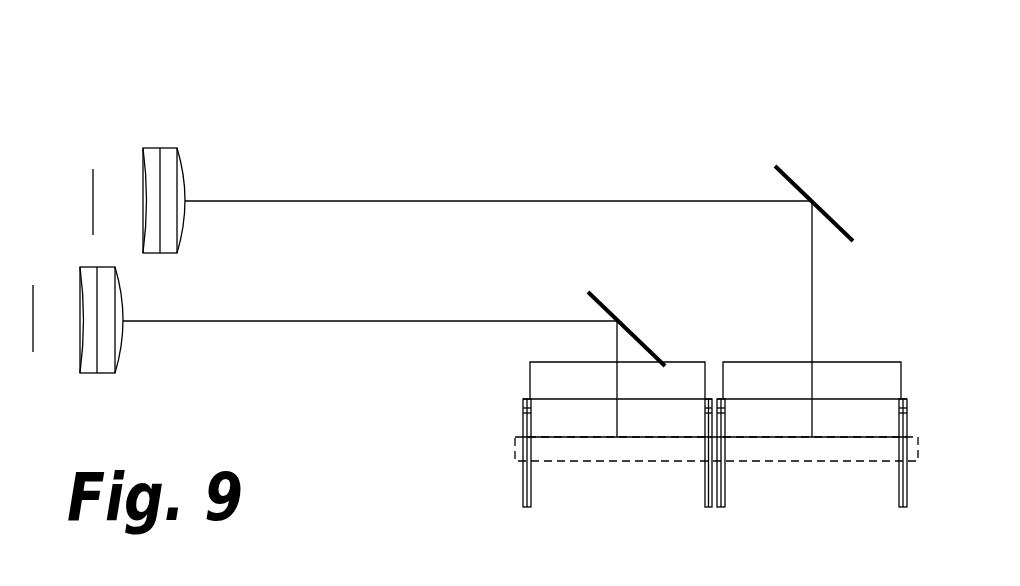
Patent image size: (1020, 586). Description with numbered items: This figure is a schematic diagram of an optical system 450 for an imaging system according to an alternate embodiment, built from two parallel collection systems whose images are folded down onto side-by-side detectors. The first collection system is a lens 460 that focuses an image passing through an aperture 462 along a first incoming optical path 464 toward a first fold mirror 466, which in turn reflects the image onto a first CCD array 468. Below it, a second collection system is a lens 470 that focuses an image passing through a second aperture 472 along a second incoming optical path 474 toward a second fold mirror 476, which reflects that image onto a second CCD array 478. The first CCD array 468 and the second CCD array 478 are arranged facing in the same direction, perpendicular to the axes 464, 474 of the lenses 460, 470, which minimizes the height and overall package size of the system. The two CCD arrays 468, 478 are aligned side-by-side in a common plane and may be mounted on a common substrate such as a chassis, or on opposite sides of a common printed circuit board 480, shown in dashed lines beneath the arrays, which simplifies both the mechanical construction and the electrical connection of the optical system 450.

The optical system 450 is at (346, 56).
The lens 460 is at (175, 175).
The aperture 462 is at (91, 196).
The first incoming optical path 464 is at (552, 200).
The first fold mirror 466 is at (795, 184).
The first CCD array 468 is at (768, 377).
The lens 470 is at (117, 340).
The aperture 472 is at (34, 336).
The incoming optical path 474 is at (445, 320).
The fold mirror 476 is at (607, 306).
The second CCD array 478 is at (570, 367).
The printed circuit board 480 is at (514, 448).